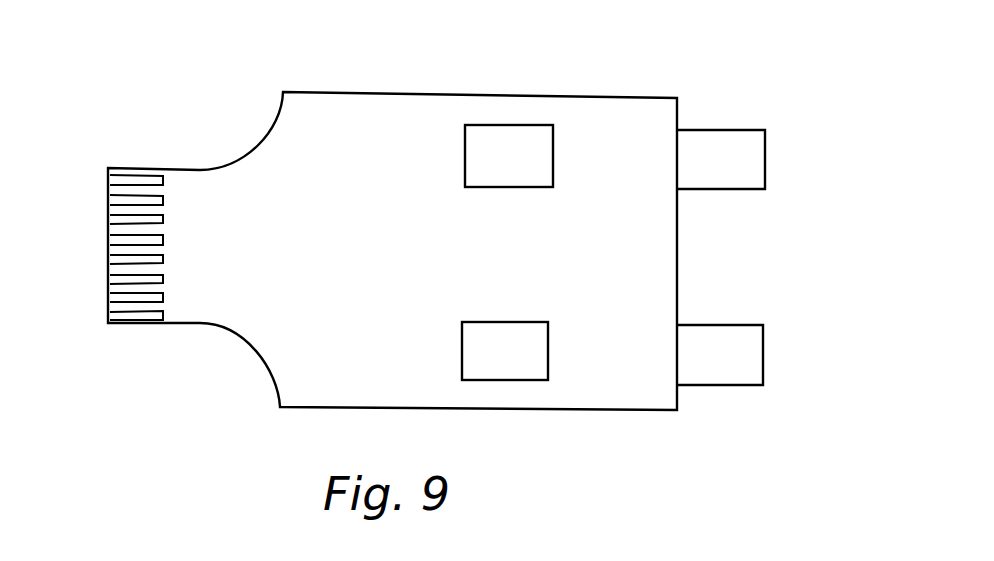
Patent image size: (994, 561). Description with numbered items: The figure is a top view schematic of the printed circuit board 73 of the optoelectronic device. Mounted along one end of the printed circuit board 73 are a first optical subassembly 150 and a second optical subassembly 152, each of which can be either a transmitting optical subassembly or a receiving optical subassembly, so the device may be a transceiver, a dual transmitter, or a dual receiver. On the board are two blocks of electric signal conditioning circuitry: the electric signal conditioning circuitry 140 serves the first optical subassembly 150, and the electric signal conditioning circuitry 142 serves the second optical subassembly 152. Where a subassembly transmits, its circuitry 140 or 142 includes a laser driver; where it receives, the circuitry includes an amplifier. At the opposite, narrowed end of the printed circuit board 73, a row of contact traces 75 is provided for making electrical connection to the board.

The printed circuit board 73 is at (372, 87).
The contact traces 75 is at (107, 297).
The electric signal conditioning circuitry 140 is at (505, 125).
The electric signal conditioning circuitry 142 is at (548, 362).
The first optical subassembly 150 is at (710, 130).
The second optical subassembly 152 is at (727, 323).